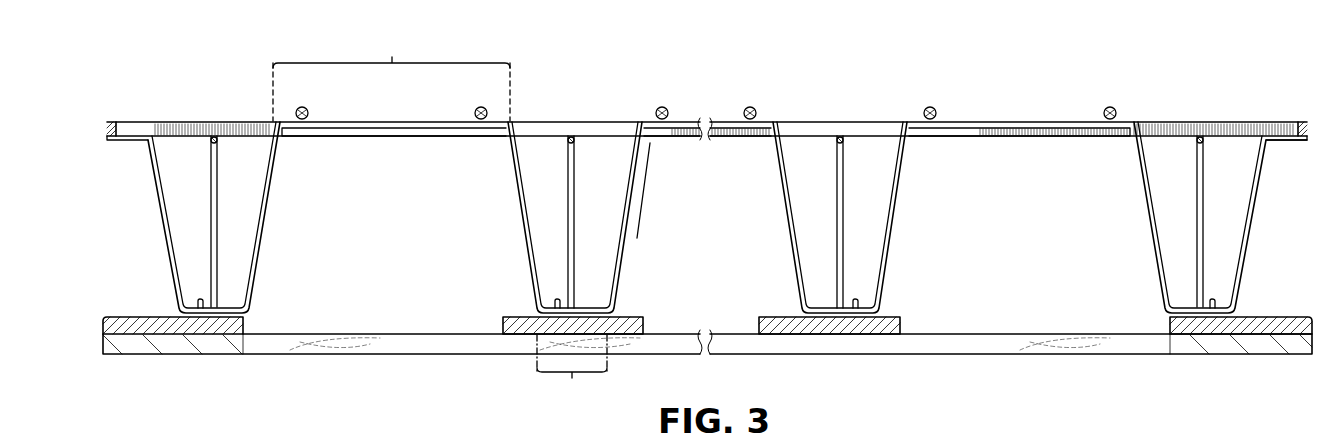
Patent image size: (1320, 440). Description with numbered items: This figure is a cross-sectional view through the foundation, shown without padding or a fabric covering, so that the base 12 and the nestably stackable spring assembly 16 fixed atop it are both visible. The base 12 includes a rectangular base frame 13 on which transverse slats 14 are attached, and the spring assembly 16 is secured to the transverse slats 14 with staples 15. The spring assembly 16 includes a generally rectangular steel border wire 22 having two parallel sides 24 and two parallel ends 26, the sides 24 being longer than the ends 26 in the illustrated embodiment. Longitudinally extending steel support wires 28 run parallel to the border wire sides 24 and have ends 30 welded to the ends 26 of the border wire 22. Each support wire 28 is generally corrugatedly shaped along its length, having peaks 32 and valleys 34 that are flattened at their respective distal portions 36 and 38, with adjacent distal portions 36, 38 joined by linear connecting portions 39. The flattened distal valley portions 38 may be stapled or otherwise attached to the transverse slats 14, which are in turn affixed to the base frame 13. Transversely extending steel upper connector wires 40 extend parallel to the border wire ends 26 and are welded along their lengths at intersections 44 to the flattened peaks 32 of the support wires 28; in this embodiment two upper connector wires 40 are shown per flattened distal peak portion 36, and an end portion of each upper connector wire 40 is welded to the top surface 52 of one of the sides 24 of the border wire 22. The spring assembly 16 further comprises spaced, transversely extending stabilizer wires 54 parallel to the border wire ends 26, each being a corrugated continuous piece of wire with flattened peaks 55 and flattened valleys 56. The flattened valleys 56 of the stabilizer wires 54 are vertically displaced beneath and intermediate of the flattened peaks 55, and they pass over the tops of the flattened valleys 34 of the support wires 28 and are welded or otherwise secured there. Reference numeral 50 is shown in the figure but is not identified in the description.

The base 12 is at (112, 292).
The base frame 13 is at (292, 356).
The transverse slats 14 is at (165, 317).
The staples 15 is at (199, 298).
The nestably stackable spring assembly 16 is at (1257, 88).
The border wire 22 is at (533, 138).
The sides 24 is at (621, 129).
The ends 26 is at (111, 121).
The support wires 28 is at (270, 216).
The ends 30 is at (113, 142).
The peaks 32 is at (417, 131).
The valleys 34 is at (238, 305).
The flattened distal peak portions 36 is at (391, 79).
The flattened distal valley portions 38 is at (572, 368).
The linear connecting portions 39 is at (637, 231).
The upper connector wires 40 is at (309, 107).
The intersections 44 is at (303, 129).
The insulation layer 50 is at (191, 138).
The top surface 52 is at (196, 124).
The stabilizer wires 54 is at (220, 178).
The flattened peaks 55 is at (217, 141).
The flattened valleys 56 is at (211, 310).